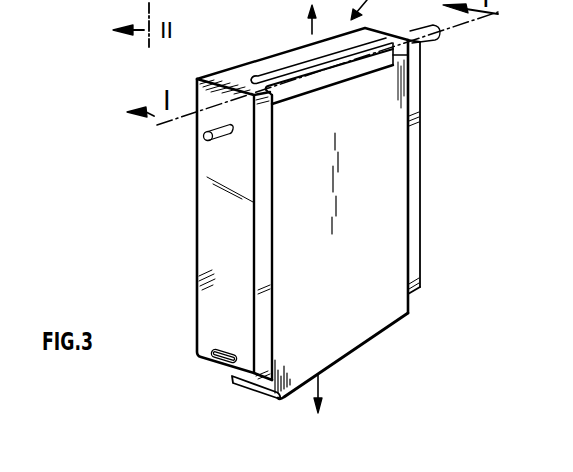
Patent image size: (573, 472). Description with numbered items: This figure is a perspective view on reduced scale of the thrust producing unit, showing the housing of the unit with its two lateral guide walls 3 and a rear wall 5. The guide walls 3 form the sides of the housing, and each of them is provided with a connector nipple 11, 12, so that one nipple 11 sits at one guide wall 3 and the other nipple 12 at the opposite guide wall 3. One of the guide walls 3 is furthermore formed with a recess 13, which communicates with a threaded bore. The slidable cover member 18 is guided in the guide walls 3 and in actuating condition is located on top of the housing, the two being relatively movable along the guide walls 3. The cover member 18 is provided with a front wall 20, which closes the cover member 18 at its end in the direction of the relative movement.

The guide walls 3 is at (210, 256).
The rear wall 5 is at (272, 68).
The connector nipple 11 is at (437, 43).
The connector nipple 12 is at (207, 141).
The recess 13 is at (220, 368).
The cover member 18 is at (393, 258).
The front wall 20 is at (260, 393).